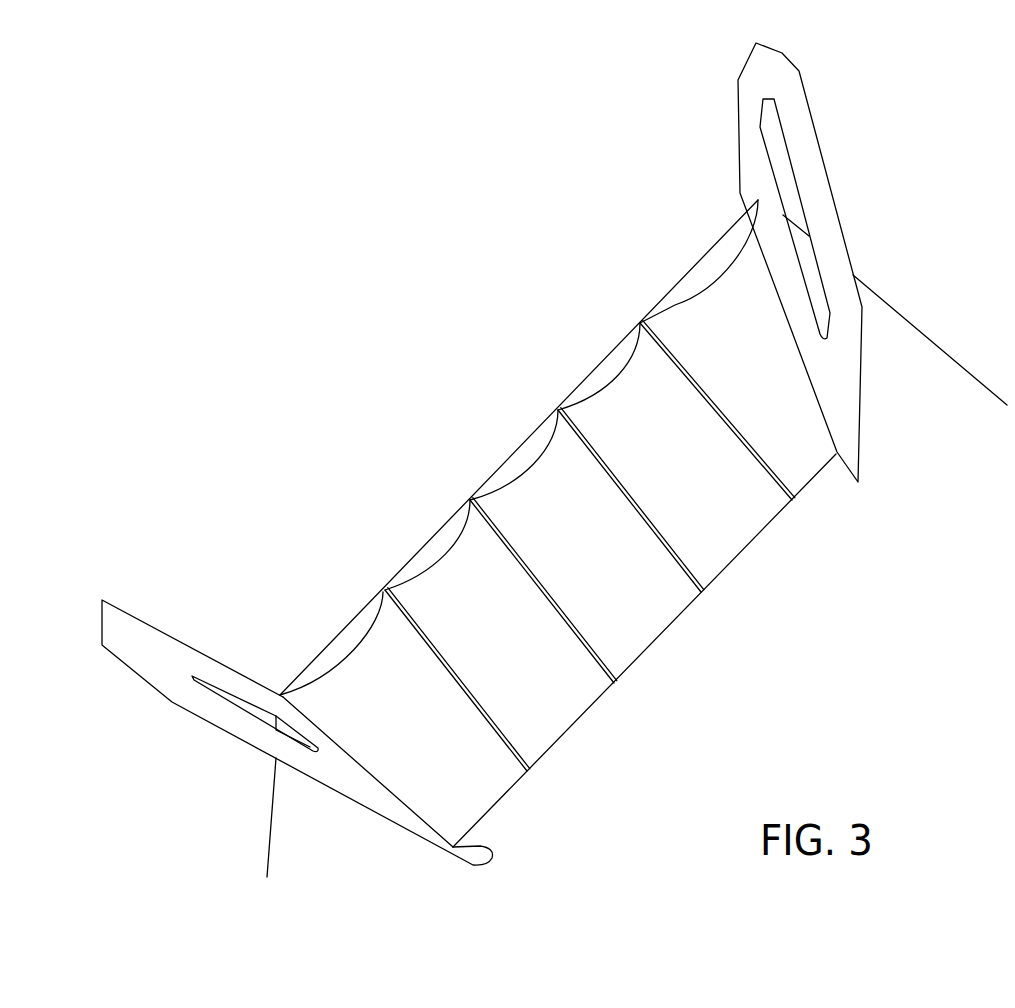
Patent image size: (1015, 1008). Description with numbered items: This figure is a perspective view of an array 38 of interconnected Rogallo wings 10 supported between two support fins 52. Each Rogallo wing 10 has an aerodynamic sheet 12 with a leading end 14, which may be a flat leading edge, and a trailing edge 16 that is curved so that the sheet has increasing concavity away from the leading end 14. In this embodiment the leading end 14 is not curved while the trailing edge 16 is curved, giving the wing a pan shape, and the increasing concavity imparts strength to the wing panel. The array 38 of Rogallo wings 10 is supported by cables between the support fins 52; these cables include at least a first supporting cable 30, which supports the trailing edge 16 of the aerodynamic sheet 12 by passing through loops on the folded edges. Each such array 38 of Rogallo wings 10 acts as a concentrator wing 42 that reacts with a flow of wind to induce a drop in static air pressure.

The Rogallo wing 10 is at (508, 808).
The aerodynamic sheet 12 is at (590, 545).
The leading end 14 is at (685, 614).
The trailing edge 16 is at (675, 303).
The first supporting cable 30 is at (418, 548).
The array 38 is at (397, 388).
The concentrator wing 42 is at (292, 435).
The support fin 52 is at (833, 200).